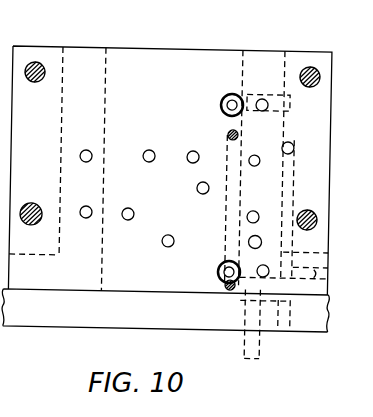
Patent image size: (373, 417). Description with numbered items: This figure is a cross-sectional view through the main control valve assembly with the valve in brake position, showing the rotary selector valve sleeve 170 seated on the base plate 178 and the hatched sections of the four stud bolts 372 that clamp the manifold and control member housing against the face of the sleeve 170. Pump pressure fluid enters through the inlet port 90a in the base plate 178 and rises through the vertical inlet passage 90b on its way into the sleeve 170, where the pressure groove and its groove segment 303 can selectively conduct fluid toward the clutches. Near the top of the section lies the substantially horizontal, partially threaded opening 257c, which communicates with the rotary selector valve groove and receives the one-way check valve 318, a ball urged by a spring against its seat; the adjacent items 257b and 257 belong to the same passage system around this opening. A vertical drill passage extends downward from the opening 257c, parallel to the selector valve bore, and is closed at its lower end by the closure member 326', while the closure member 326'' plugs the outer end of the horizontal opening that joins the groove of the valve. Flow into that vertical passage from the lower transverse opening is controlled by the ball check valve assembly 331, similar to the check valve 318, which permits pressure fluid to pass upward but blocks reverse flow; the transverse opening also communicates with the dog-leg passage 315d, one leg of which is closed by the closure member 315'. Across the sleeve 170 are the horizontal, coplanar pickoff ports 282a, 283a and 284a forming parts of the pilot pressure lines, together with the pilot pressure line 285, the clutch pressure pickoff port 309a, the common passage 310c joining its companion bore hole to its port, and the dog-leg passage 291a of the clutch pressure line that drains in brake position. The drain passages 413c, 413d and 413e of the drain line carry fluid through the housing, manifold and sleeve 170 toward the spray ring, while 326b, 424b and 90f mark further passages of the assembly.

The valve sleeve 170 is at (209, 43).
The base plate 178 is at (84, 326).
The stud bolts 372 is at (38, 62).
The one-way check valve 318 is at (246, 76).
The ball check valve assembly 331 is at (222, 266).
The bracket portion 257b is at (254, 93).
The partially threaded opening 257c is at (273, 98).
The bracket 257 is at (309, 104).
The pick-off port 282a is at (89, 148).
The pick-off port 283a is at (150, 147).
The closure member 326'' is at (210, 125).
The pick-off port 284a is at (206, 140).
The pin 326b is at (238, 158).
The pilot pressure line 285 is at (261, 153).
The drain passage 413c is at (290, 137).
The dog-leg passage 291a is at (90, 205).
The pickoff port 309a is at (131, 206).
The pivot pin 424b is at (205, 179).
The common passage 310c is at (256, 206).
The drain passage 413d is at (293, 195).
The pivot pin 90f is at (172, 232).
The groove segment 303 is at (266, 235).
The closure member 315' is at (314, 247).
The dog-leg passage 315d is at (262, 264).
The closure member 326' is at (208, 283).
The vertical inlet passage 90b is at (246, 299).
The inlet port 90a is at (251, 341).
The drain passage 413e is at (331, 316).